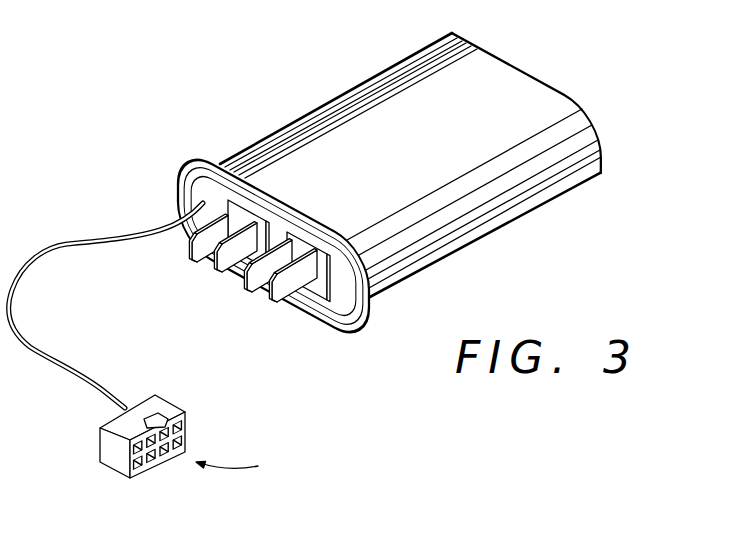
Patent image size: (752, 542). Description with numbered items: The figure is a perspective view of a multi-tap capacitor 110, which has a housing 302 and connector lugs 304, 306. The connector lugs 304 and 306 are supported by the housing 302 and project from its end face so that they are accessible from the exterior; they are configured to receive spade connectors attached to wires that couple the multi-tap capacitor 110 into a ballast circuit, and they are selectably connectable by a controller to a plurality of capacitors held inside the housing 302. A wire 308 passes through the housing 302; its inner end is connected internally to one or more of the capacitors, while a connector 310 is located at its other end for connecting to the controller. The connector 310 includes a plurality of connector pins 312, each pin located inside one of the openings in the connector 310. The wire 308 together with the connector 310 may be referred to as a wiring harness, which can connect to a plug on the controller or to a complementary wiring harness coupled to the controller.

The multi-tap capacitor 110 is at (305, 260).
The housing 302 is at (412, 63).
The connector lug 304 is at (188, 262).
The connector lug 306 is at (265, 308).
The wire 308 is at (97, 236).
The connector 310 is at (113, 463).
The connector pins 312 is at (249, 470).